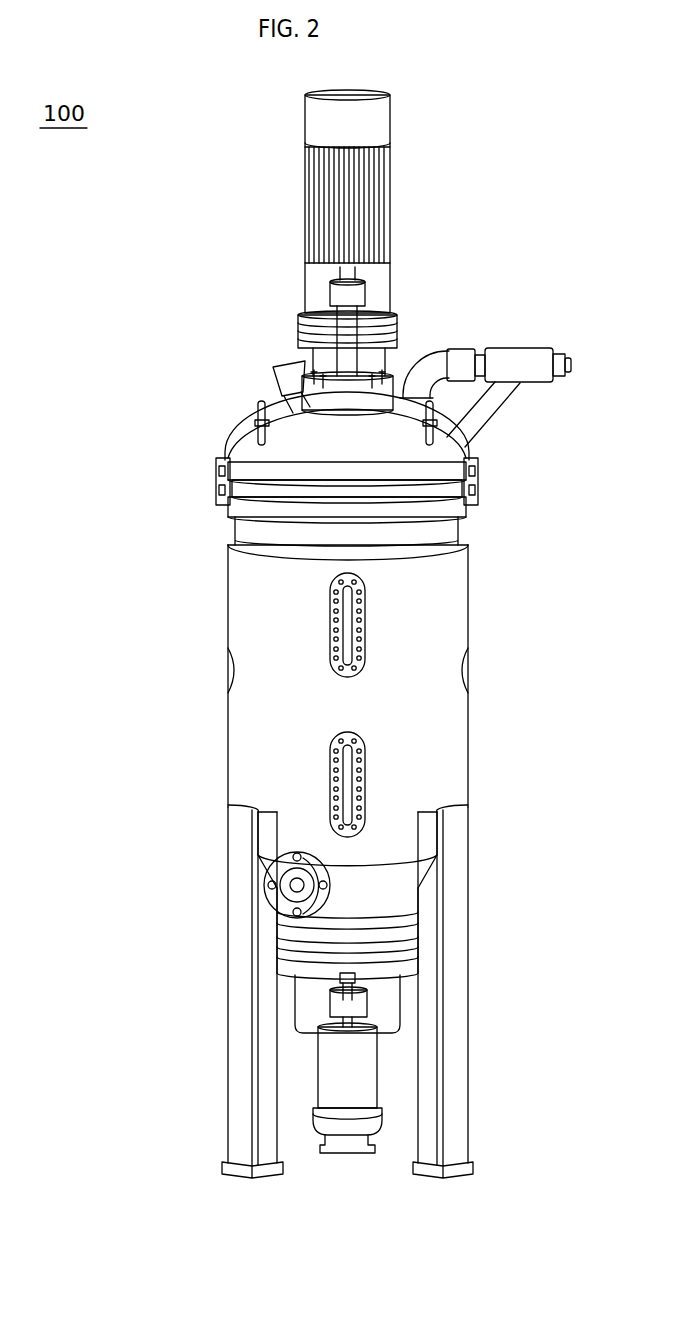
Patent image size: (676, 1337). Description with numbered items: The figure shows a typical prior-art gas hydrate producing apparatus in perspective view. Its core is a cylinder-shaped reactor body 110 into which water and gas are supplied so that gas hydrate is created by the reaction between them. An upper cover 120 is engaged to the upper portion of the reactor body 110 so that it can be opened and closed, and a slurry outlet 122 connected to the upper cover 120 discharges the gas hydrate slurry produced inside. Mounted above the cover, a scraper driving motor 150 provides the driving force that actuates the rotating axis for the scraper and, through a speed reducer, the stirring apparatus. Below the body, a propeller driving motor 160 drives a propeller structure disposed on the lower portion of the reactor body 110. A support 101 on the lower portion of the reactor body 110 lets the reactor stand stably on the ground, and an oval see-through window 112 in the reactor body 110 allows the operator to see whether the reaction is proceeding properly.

The support 101 is at (238, 1040).
The reactor body 110 is at (249, 748).
The see-through window 112 is at (347, 773).
The upper cover 120 is at (255, 433).
The slurry outlet 122 is at (513, 352).
The scraper driving motor 150 is at (368, 204).
The propeller driving motor 160 is at (343, 1095).